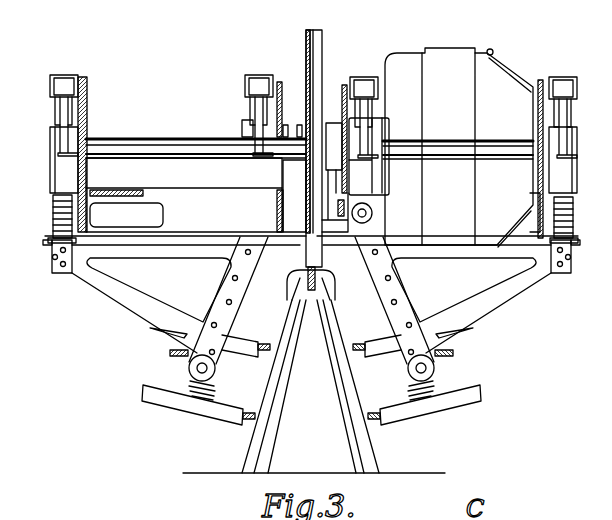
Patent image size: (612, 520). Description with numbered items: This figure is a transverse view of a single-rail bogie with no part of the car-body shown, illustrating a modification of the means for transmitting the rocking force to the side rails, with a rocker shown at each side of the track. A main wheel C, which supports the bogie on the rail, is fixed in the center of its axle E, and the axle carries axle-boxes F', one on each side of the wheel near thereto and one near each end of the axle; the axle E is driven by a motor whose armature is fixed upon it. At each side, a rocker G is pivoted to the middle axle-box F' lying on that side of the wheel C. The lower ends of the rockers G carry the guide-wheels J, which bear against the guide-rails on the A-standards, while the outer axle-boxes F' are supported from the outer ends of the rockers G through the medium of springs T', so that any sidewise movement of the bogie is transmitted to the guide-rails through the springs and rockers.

The main wheel C is at (320, 47).
The axle E is at (330, 130).
The axle-box F' is at (312, 155).
The rocker G is at (178, 252).
The spring T' is at (308, 219).
The guide-wheel J is at (248, 344).